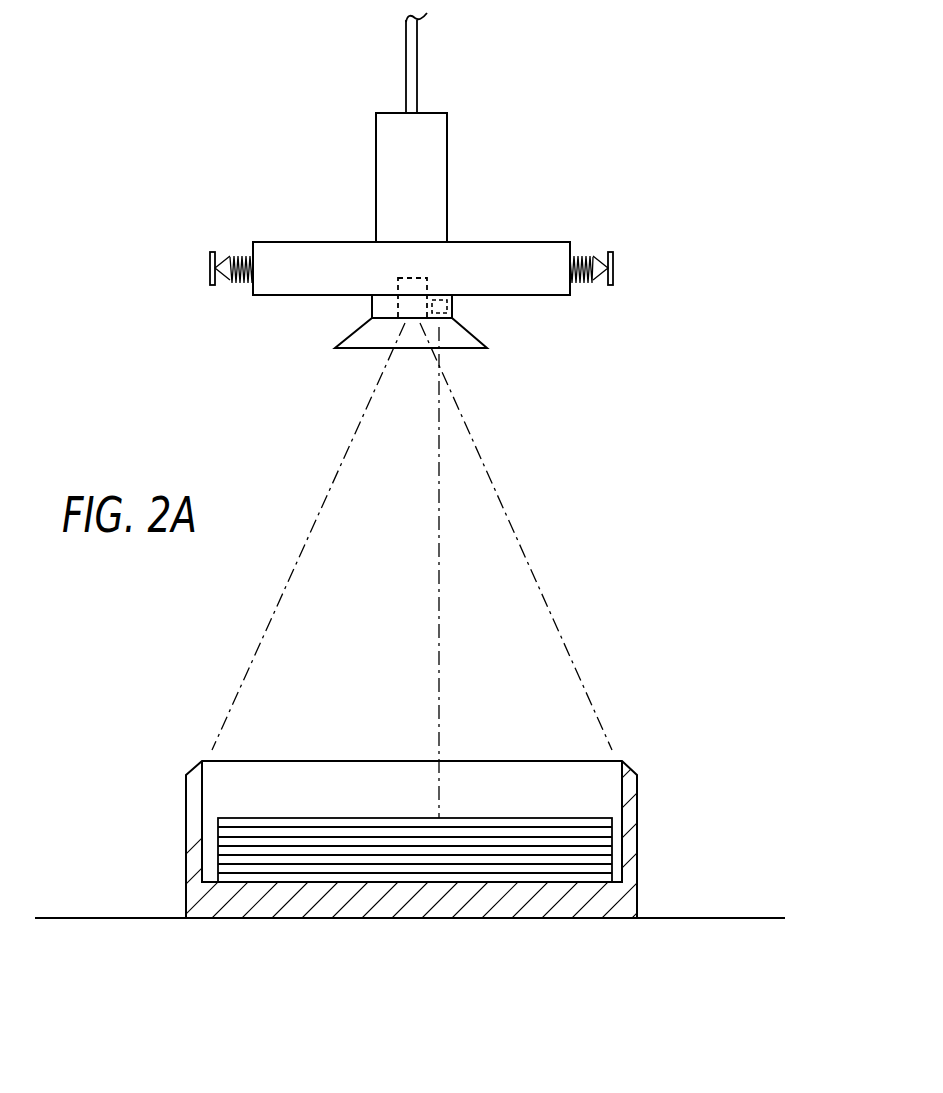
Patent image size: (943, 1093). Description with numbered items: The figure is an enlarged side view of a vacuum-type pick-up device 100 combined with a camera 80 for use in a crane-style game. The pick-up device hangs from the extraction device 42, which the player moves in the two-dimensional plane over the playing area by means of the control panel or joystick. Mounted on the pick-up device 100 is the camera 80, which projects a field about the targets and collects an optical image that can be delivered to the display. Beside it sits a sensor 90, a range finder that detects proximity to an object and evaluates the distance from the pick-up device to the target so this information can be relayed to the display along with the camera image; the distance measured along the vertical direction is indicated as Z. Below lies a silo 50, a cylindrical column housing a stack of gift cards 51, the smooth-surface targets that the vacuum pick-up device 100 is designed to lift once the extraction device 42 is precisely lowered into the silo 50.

The extraction device 42 is at (447, 143).
The camera 80 is at (405, 308).
The sensor 90 is at (447, 307).
The pick-up device 100 is at (473, 334).
The silo 50 is at (637, 812).
The gift card 51 is at (493, 818).
The vertical axis Z is at (440, 672).